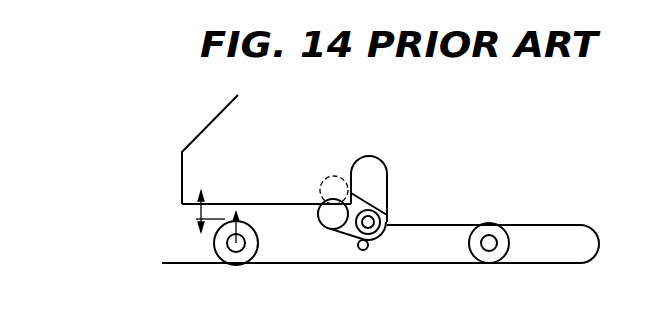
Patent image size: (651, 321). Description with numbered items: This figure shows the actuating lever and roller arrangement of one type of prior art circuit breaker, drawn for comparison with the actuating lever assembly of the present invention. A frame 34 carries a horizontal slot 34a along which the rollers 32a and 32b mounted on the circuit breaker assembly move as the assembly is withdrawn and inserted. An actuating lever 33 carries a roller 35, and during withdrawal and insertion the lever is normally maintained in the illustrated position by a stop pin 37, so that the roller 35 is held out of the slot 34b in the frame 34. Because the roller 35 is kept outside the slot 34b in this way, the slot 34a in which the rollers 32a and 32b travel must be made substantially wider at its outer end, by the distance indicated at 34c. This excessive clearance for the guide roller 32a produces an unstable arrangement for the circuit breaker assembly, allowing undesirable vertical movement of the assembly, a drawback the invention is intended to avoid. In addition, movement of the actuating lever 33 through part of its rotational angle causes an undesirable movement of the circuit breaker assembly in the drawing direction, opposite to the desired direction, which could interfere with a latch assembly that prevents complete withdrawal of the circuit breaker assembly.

The roller 32a is at (238, 265).
The roller 32b is at (495, 263).
The actuating lever 33 is at (348, 241).
The frame 34 is at (182, 168).
The slot 34a is at (266, 207).
The slot 34b is at (386, 181).
The distance 34c is at (197, 214).
The roller 35 is at (387, 222).
The stop pin 37 is at (364, 250).